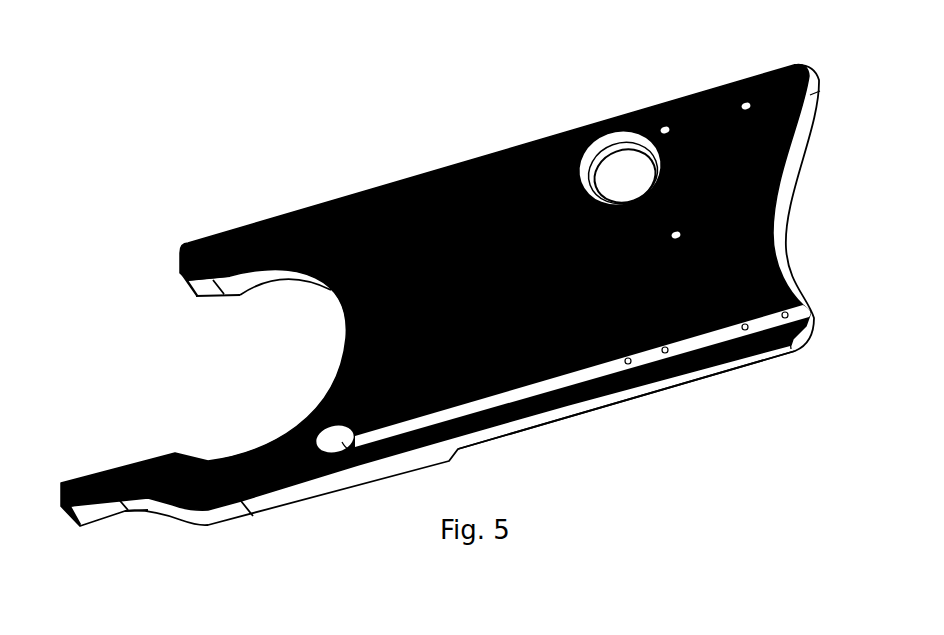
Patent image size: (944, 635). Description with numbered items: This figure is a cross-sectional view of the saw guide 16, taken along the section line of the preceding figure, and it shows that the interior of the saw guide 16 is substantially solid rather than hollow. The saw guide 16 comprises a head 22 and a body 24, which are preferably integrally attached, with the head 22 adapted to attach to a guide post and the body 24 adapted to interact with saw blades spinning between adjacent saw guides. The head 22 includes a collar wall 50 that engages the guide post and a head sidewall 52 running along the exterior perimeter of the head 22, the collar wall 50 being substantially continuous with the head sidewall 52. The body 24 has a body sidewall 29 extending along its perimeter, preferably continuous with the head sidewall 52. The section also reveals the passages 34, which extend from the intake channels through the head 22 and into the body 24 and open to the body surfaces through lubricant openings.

The saw guide 16 is at (330, 148).
The head 22 is at (243, 217).
The body 24 is at (512, 137).
The body sidewall 29 is at (593, 393).
The passages 34 is at (787, 305).
The collar wall 50 is at (265, 266).
The head sidewall 52 is at (192, 507).